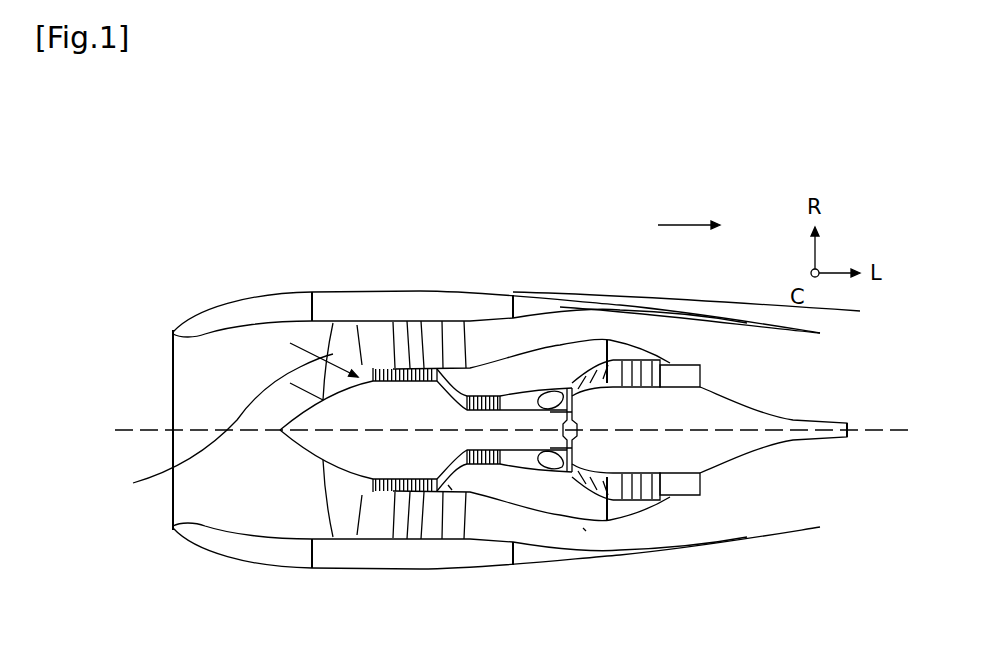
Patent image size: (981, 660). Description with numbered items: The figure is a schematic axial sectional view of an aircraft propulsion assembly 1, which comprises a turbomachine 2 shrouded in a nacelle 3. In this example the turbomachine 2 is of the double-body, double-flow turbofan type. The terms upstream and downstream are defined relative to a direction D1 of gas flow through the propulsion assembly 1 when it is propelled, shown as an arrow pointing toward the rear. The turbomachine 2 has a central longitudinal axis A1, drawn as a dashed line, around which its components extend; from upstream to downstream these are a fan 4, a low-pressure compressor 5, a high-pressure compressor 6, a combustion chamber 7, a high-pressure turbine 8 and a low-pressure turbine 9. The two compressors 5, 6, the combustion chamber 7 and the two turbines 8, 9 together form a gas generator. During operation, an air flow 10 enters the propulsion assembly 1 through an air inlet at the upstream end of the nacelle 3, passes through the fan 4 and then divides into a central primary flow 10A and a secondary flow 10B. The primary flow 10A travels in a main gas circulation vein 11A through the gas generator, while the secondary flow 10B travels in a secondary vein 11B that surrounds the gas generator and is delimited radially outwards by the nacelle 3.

The aircraft propulsion assembly 1 is at (501, 412).
The turbomachine 2 is at (563, 379).
The nacelle 3 is at (417, 300).
The fan 4 is at (338, 512).
The low-pressure compressor 5 is at (393, 352).
The high-pressure compressor 6 is at (493, 385).
The combustion chamber 7 is at (544, 375).
The high-pressure turbine 8 is at (588, 354).
The low-pressure turbine 9 is at (631, 352).
The air flow 10 is at (387, 336).
The primary flow 10A is at (213, 425).
The secondary flow 10B is at (343, 332).
The main gas circulation vein 11A is at (448, 485).
The secondary vein 11B is at (583, 528).
The central longitudinal axis A1 is at (133, 428).
The direction of gas flow D1 is at (677, 222).